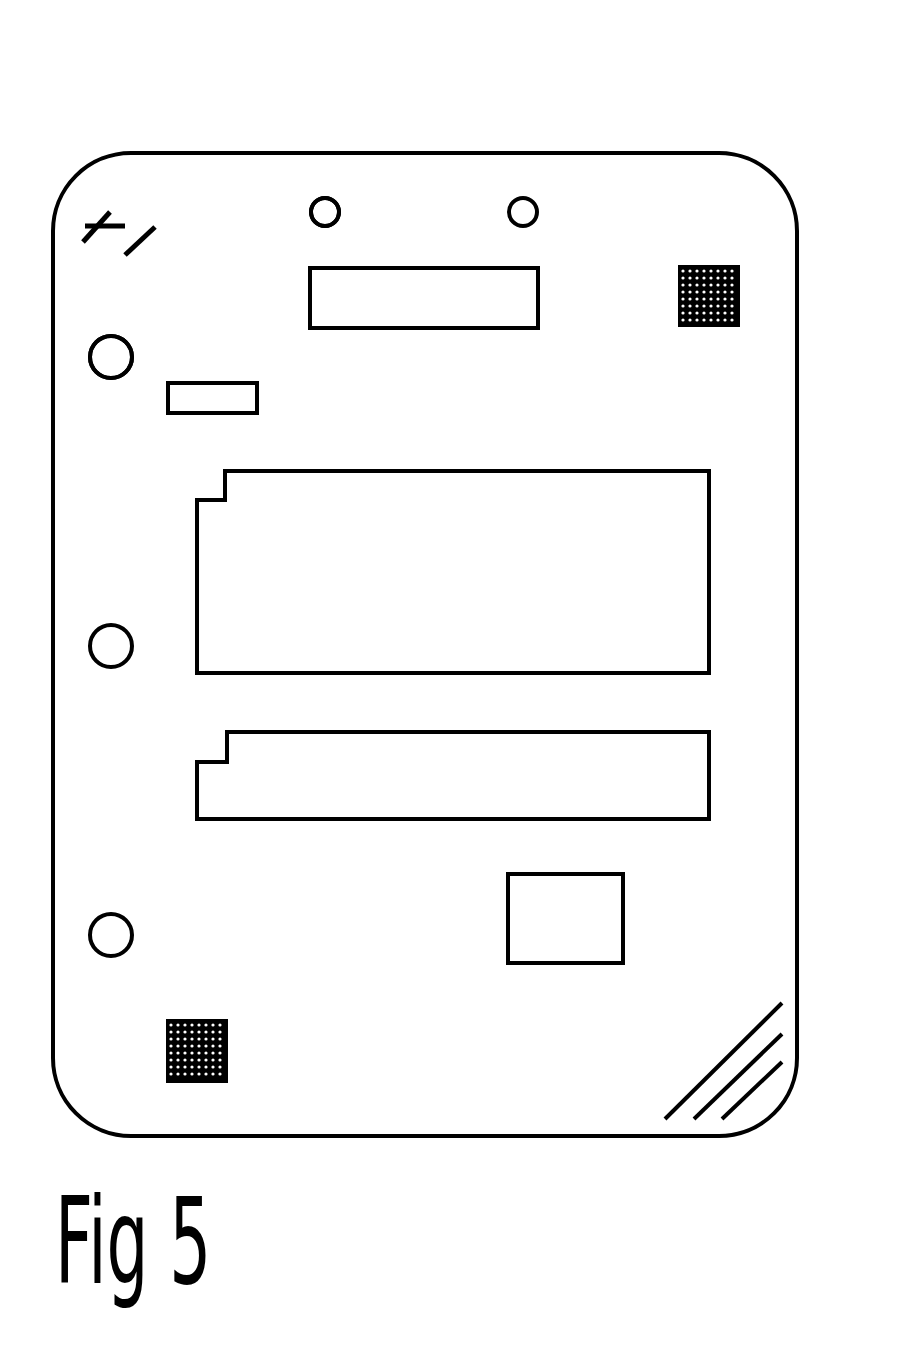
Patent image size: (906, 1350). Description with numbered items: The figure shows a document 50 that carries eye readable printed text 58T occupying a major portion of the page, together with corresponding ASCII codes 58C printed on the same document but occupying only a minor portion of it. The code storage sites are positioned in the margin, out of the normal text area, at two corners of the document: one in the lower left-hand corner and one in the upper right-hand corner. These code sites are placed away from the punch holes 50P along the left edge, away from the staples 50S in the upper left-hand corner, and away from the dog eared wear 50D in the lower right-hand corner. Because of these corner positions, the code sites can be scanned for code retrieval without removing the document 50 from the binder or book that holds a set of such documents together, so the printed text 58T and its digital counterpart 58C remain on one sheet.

The document 50 is at (178, 43).
The staples 50S is at (118, 218).
The punch holes 50P is at (312, 212).
The eye readable printed text 58T is at (507, 550).
The ASCII codes 58C is at (673, 287).
The dog eared wear 50D is at (717, 1060).